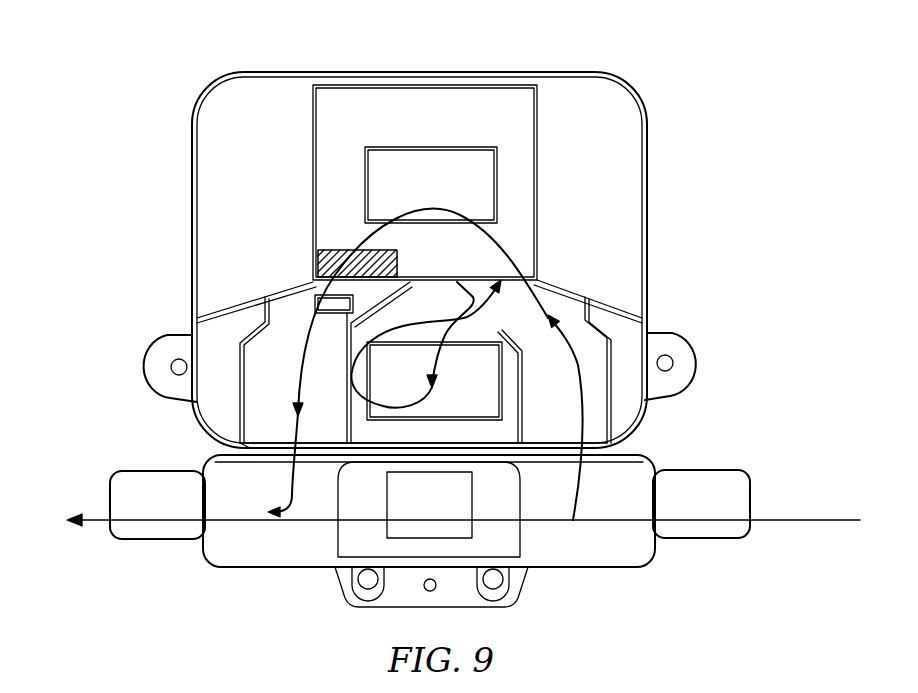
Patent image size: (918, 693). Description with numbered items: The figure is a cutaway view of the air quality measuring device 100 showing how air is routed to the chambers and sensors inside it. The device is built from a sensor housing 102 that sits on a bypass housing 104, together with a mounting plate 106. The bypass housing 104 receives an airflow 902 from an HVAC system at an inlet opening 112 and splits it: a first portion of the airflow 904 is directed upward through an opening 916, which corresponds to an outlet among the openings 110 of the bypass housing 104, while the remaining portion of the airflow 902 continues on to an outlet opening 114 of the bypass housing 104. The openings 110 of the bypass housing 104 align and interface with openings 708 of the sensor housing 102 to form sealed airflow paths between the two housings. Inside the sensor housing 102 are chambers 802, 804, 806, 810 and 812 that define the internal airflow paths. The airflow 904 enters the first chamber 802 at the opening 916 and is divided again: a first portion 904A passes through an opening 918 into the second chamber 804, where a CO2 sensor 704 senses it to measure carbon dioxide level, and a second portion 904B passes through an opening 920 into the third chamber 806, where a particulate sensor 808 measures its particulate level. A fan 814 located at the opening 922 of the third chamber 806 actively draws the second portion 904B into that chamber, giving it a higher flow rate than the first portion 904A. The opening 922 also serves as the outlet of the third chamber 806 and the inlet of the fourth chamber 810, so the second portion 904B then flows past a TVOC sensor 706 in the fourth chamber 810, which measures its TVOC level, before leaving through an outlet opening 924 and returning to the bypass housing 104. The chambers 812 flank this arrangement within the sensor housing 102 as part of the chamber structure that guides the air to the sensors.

The air quality measuring device 100 is at (172, 50).
The sensor housing 102 is at (612, 76).
The bypass housing 104 is at (600, 565).
The mounting plate 106 is at (682, 335).
The openings 110 is at (333, 460).
The inlet opening 112 is at (753, 485).
The outlet opening 114 is at (110, 492).
The CO2 sensor 704 is at (416, 387).
The TVOC sensor 706 is at (315, 300).
The openings 708 is at (315, 440).
The first chamber 802 is at (600, 360).
The second chamber 804 is at (425, 327).
The third chamber 806 is at (352, 122).
The particulate sensor 808 is at (449, 196).
The fourth chamber 810 is at (281, 381).
The chamber 812 is at (270, 182).
The fan 814 is at (318, 262).
The airflow 902 is at (828, 515).
The first portion of the airflow 904 is at (576, 486).
The first portion of the airflow 904 904A is at (508, 290).
The second portion of the airflow 904 904B is at (495, 222).
The opening 916 is at (528, 440).
The opening 918 is at (493, 318).
The opening 920 is at (445, 290).
The opening 922 is at (360, 250).
The outlet opening 924 is at (278, 440).